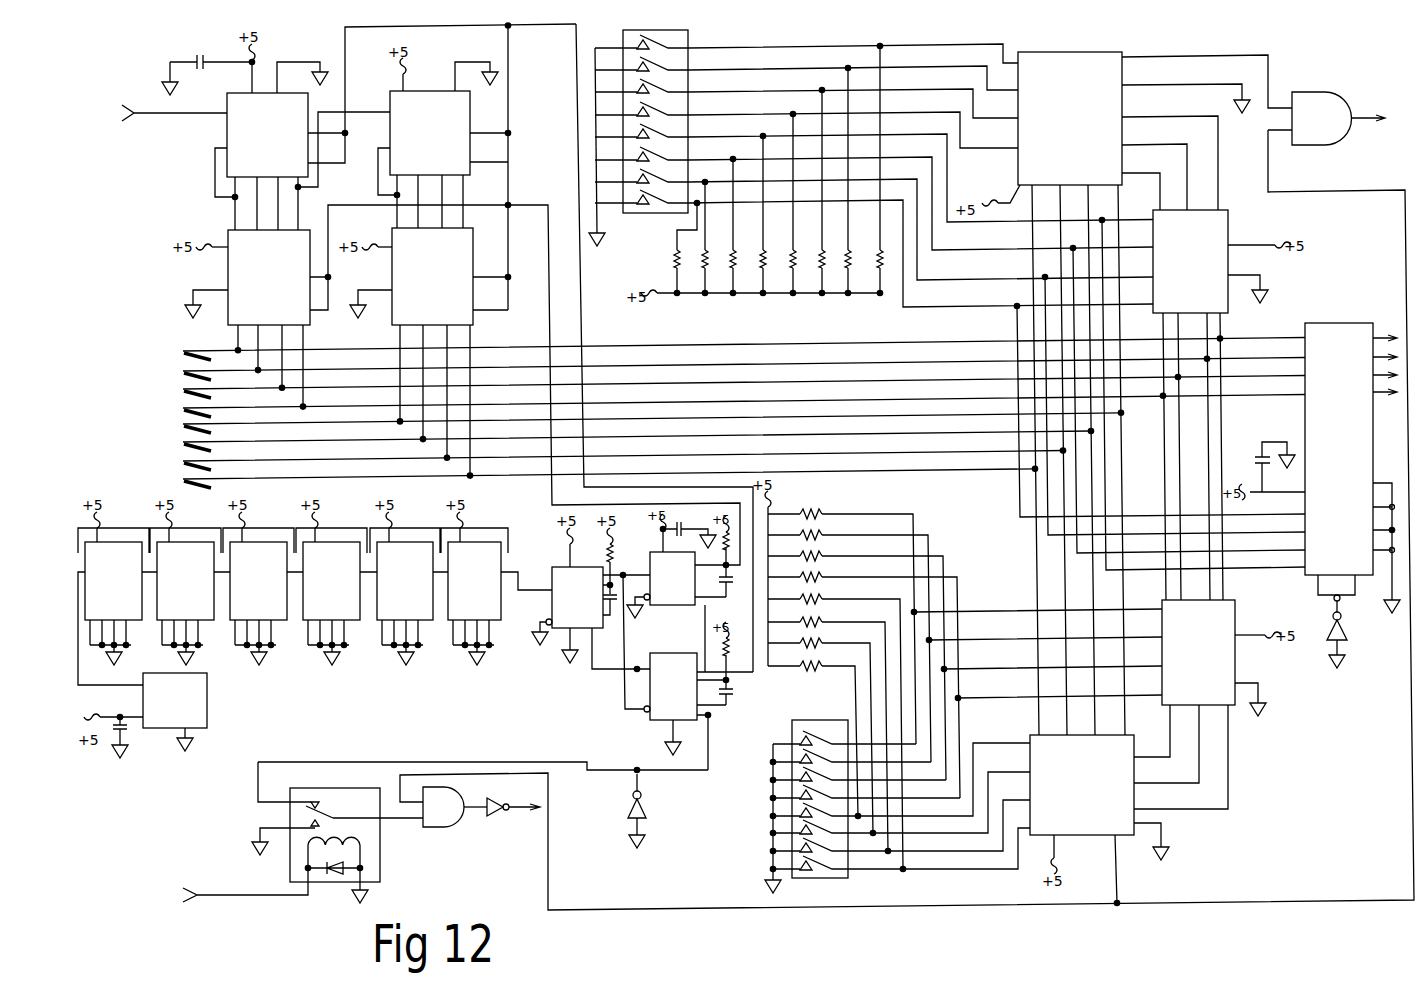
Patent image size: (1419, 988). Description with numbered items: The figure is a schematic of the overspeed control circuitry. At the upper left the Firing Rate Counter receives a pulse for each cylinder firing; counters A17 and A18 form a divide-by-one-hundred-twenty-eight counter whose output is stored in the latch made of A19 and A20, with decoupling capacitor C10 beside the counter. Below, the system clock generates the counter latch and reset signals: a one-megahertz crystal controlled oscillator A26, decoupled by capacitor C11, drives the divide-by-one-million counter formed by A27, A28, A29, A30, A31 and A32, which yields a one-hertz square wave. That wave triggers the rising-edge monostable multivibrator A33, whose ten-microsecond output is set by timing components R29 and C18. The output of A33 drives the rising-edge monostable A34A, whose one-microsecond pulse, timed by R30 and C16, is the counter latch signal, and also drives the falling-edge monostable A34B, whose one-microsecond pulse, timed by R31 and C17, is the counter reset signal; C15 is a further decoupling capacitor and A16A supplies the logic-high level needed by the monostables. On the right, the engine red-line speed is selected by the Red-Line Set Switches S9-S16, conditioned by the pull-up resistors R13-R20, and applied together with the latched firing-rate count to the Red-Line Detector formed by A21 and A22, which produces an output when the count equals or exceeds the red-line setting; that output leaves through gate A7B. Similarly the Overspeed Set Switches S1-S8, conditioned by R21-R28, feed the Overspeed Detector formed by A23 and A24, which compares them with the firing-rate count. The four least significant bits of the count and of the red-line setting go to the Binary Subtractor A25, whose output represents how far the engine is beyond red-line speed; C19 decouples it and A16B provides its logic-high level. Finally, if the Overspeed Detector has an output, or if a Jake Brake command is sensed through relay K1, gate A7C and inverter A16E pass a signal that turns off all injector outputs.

The divide-by-128 counter stage A17 is at (267, 135).
The divide-by-128 counter stage A18 is at (430, 133).
The latch A19 is at (269, 277).
The latch A20 is at (432, 276).
The Red-Line Detector component A21 is at (1070, 118).
The Red-Line Detector component A22 is at (1190, 261).
The Overspeed Detector component A23 is at (1082, 785).
The Overspeed Detector component A24 is at (1198, 652).
The Binary Subtractor A25 is at (1339, 459).
The crystal controlled oscillator A26 is at (175, 700).
The divide-by-one-million counter stage A27 is at (113, 581).
The divide-by-one-million counter stage A28 is at (185, 581).
The divide-by-one-million counter stage A29 is at (258, 581).
The divide-by-one-million counter stage A30 is at (331, 581).
The divide-by-one-million counter stage A31 is at (405, 581).
The divide-by-one-million counter stage A32 is at (474, 581).
The monostable multivibrator A33 is at (577, 597).
The monostable multivibrator A34A is at (672, 578).
The monostable multivibrator A34B is at (673, 686).
The gate A7B is at (1338, 118).
The gate A7C is at (443, 807).
The inverter A16A is at (654, 813).
The inverter A16B is at (1355, 625).
The inverter A16E is at (495, 799).
The relay K1 is at (335, 826).
The decoupling capacitor C10 is at (180, 50).
The decoupling capacitor C11 is at (131, 736).
The decoupling capacitor C15 is at (692, 522).
The timing capacitor C16 is at (715, 586).
The timing capacitor C17 is at (736, 702).
The timing capacitor C18 is at (609, 620).
The decoupling capacitor C19 is at (1249, 450).
The timing resistor R29 is at (624, 553).
The timing resistor R30 is at (730, 547).
The timing resistor R31 is at (738, 654).
The Red-Line Set Switches S9-S16 is at (641, 135).
The Overspeed Set Switches S1-S8 is at (810, 810).
The conditioning resistors R13-R20 is at (778, 284).
The conditioning resistors R21-R28 is at (799, 599).